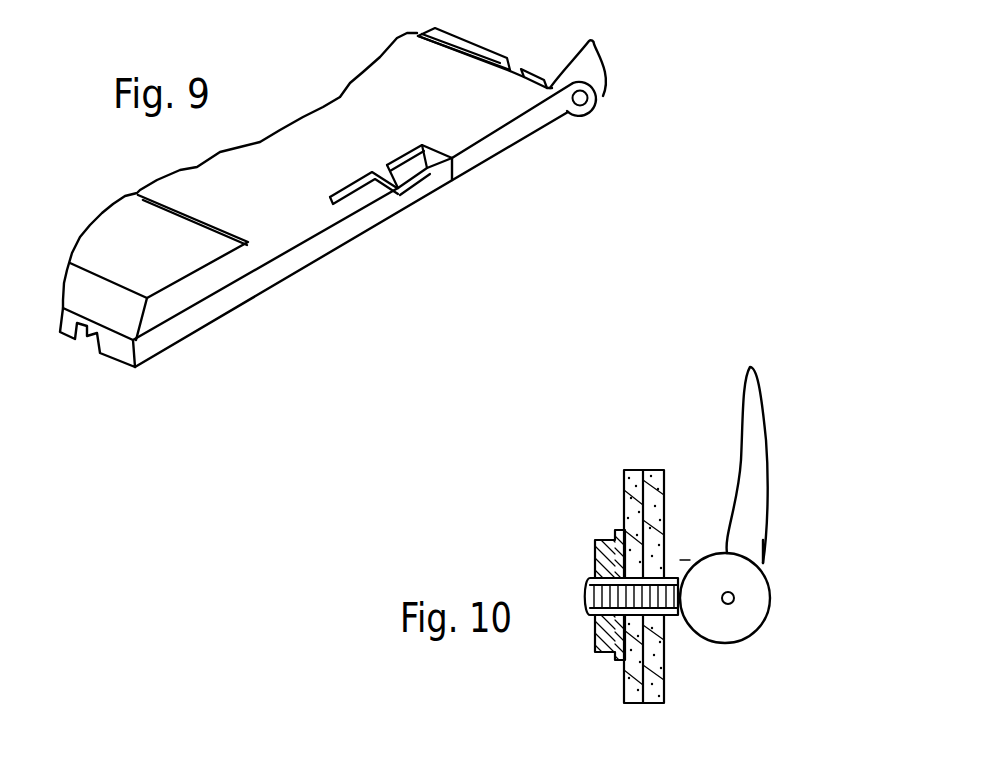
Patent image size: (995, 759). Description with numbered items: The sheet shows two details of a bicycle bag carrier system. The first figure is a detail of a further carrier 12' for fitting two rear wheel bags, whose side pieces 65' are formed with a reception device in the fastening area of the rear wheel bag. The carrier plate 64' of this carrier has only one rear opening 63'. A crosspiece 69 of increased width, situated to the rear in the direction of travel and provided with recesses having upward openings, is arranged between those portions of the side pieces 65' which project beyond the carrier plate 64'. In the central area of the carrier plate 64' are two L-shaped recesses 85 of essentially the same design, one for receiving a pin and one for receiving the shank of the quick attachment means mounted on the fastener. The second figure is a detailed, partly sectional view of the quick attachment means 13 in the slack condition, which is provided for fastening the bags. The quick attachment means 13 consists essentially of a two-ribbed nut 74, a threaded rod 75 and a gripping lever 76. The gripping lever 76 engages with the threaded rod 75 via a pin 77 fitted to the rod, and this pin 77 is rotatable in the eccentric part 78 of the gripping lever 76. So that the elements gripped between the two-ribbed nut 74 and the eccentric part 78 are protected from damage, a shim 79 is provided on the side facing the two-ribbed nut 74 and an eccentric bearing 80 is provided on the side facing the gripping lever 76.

In FIG. 9, the carrier 12' is at (314, 200).
In FIG. 9, the rear opening 63' is at (159, 267).
In FIG. 9, the carrier plate 64' is at (445, 77).
In FIG. 9, the side pieces 65' is at (529, 125).
In FIG. 9, the crosspiece 69 is at (478, 50).
In FIG. 9, the L-shaped recesses 85 is at (430, 179).
In FIG. 10, the quick attachment means 13 is at (775, 515).
In FIG. 10, the two-ribbed nut 74 is at (598, 547).
In FIG. 10, the threaded rod 75 is at (585, 590).
In FIG. 10, the gripping lever 76 is at (758, 457).
In FIG. 10, the pin 77 is at (734, 598).
In FIG. 10, the eccentric part 78 is at (738, 620).
In FIG. 10, the shim 79 is at (613, 530).
In FIG. 10, the eccentric bearing 80 is at (678, 562).